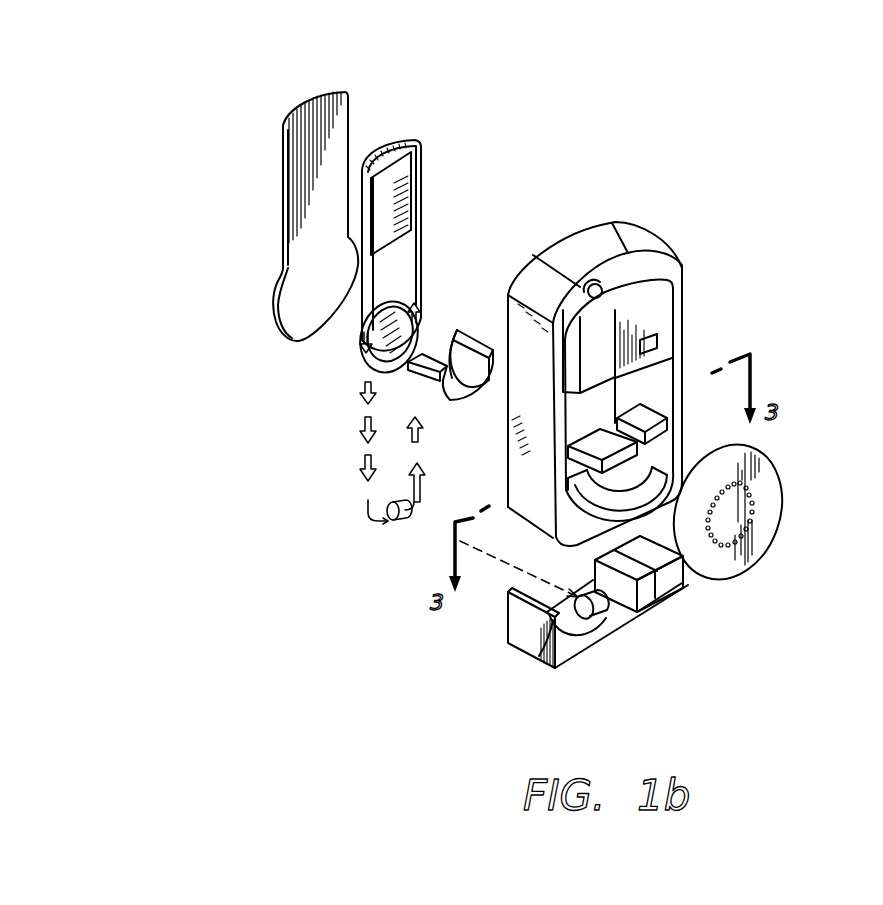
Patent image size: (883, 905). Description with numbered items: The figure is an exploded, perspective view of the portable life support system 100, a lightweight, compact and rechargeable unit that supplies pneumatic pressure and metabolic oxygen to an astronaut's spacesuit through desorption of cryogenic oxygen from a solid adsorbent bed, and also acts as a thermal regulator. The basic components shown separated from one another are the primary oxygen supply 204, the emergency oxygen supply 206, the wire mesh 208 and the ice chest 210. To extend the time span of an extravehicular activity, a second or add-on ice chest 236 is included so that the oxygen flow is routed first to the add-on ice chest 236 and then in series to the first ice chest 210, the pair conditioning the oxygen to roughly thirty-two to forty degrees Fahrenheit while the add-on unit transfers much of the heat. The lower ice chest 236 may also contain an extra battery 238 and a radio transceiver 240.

The portable life support system 100 is at (258, 399).
The primary oxygen supply 204 is at (643, 413).
The emergency oxygen supply 206 is at (590, 428).
The wire mesh 208 is at (418, 380).
The ice chest 210 is at (623, 323).
The add-on ice chest 236 is at (543, 630).
The extra battery 238 is at (672, 574).
The radio transceiver 240 is at (647, 590).